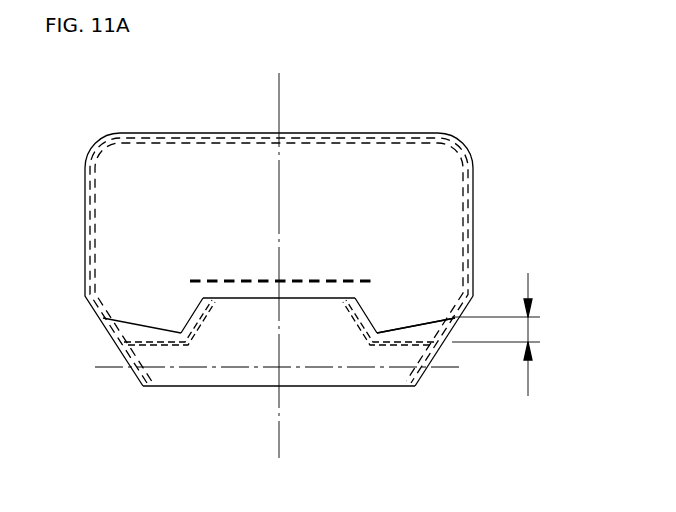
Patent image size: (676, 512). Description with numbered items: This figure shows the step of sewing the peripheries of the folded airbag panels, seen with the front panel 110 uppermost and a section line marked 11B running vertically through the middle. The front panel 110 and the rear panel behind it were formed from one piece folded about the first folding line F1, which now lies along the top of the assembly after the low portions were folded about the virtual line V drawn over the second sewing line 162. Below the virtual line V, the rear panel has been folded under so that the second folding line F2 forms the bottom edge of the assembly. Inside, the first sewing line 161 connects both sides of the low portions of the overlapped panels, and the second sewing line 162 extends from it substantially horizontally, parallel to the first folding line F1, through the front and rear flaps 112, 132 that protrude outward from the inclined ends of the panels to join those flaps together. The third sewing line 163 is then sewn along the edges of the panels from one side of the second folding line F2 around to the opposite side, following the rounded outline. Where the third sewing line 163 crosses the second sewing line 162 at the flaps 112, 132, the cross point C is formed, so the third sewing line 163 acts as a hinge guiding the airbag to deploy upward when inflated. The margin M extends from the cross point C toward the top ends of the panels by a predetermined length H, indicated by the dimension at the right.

The front panel 110 is at (113, 184).
The third sewing line 163 is at (113, 147).
The second sewing line 162 is at (140, 344).
The first sewing line 161 is at (205, 330).
The front flap 112 is at (303, 380).
The rear flap 132 is at (402, 353).
The first folding line F1 is at (240, 298).
The second folding line F2 is at (247, 388).
The virtual line V is at (107, 367).
The margin M is at (427, 332).
The cross point C is at (440, 353).
The predetermined length H is at (501, 336).
The section line 11B is at (294, 77).